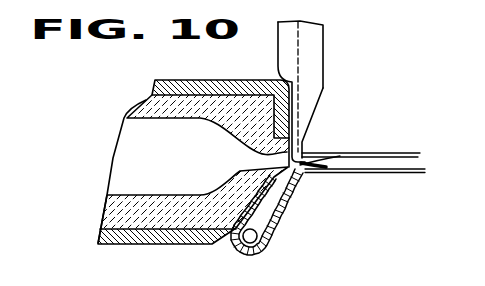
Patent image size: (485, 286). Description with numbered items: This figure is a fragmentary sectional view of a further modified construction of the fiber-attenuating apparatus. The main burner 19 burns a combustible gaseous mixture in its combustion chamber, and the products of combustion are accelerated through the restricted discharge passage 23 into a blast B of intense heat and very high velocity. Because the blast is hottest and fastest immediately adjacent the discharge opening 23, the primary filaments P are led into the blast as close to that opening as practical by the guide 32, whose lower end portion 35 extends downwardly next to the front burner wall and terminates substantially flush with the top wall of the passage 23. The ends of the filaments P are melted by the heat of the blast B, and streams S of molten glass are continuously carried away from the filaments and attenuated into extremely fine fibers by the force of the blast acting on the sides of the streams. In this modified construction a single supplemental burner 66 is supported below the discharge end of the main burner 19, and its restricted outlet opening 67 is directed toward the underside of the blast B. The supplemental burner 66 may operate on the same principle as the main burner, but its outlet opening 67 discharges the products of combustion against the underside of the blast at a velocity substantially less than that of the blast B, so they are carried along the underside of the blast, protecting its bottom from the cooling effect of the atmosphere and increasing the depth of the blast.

The burner 19 is at (219, 80).
The outlet or discharge passage 23 is at (288, 158).
The guide 32 is at (319, 91).
The lower end portion of the plate 35 is at (303, 135).
The primary filaments P is at (304, 148).
The streams of molten glass S is at (351, 155).
The blast B is at (371, 164).
The outlet opening 67 is at (304, 182).
The supplemental burner 66 is at (268, 212).